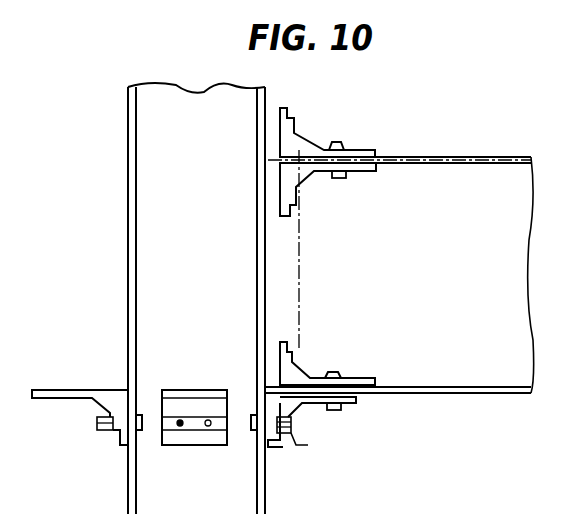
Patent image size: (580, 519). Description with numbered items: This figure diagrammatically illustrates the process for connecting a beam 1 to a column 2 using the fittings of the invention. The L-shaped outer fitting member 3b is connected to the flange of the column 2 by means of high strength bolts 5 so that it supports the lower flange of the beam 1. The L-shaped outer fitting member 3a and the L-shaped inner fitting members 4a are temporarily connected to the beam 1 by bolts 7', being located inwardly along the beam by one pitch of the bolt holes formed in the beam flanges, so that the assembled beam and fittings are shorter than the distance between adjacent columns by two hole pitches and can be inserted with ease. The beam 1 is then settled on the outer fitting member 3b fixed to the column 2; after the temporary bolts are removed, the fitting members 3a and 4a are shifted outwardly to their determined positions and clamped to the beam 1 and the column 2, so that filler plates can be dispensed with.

The beam 1 is at (438, 173).
The column 2 is at (143, 218).
The outer fitting member 3a is at (307, 140).
The outer fitting member 3b is at (294, 403).
The inner fitting member 4a is at (310, 177).
The high strength bolt 5 is at (293, 434).
The bolt 7' is at (369, 139).